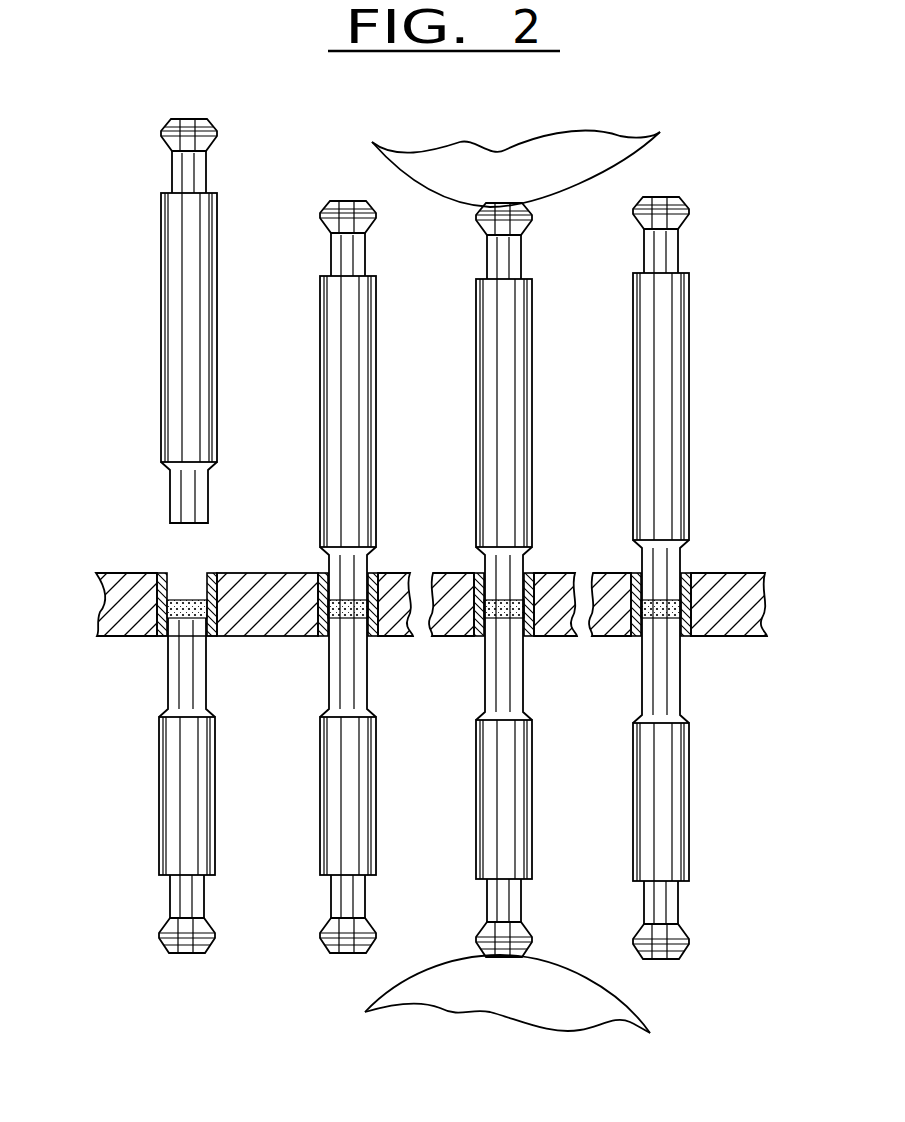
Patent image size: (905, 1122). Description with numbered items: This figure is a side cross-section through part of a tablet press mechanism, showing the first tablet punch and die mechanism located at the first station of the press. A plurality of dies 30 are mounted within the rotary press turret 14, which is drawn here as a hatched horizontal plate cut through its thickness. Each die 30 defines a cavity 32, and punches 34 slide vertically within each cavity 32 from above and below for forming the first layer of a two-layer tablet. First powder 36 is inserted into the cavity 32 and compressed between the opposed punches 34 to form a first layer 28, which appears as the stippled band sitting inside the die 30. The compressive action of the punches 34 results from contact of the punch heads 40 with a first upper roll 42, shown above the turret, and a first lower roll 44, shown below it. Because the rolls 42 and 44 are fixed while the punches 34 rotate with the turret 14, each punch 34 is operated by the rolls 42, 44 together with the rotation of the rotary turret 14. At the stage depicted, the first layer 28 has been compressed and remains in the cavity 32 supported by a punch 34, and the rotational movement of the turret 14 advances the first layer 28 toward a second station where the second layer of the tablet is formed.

The rotary press turret 14 is at (715, 643).
The first layer 28 is at (158, 637).
The die 30 is at (370, 633).
The cavity 32 is at (187, 573).
The punch 34 is at (192, 288).
The first powder 36 is at (657, 607).
The punch head 40 is at (492, 207).
The first upper roll 42 is at (473, 158).
The first lower roll 44 is at (438, 995).